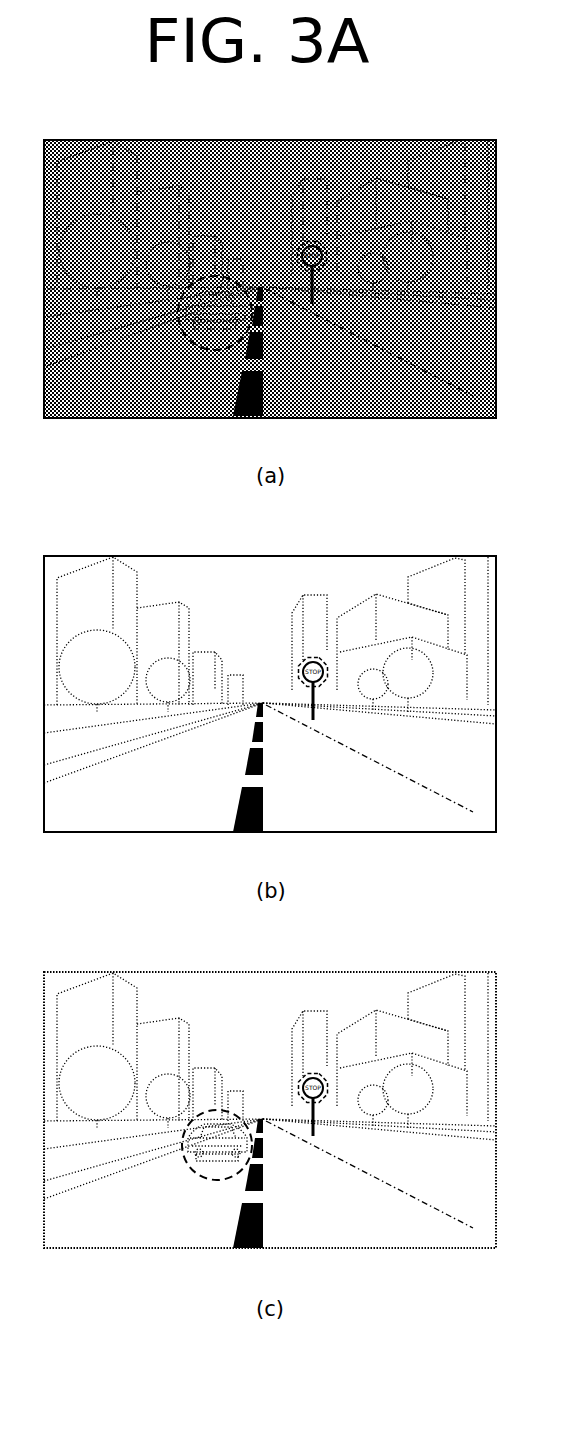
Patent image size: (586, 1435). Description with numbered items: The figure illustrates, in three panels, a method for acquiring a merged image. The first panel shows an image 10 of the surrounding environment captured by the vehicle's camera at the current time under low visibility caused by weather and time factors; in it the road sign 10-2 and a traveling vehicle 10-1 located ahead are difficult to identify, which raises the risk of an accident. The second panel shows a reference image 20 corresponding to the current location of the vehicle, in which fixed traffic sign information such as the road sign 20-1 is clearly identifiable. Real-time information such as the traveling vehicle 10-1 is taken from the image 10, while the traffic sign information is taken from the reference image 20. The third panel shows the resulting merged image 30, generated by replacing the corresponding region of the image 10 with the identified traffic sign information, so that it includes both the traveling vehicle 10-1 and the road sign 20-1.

The image of the surrounding environment 10 is at (474, 140).
The traveling vehicle 10-1 is at (203, 351).
The road sign 10-2 is at (318, 240).
The reference image 20 is at (473, 557).
The road sign 20-1 is at (315, 656).
The merged image 30 is at (473, 972).